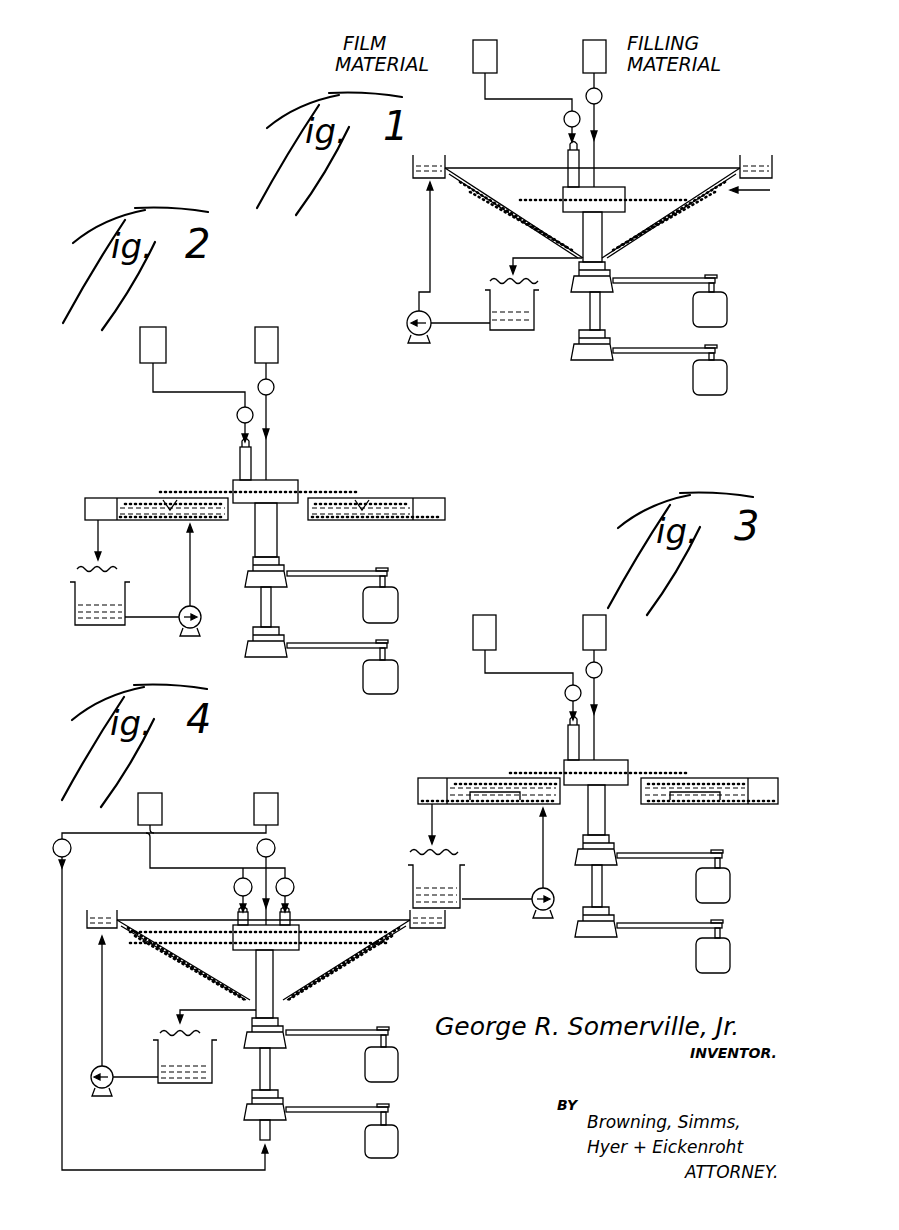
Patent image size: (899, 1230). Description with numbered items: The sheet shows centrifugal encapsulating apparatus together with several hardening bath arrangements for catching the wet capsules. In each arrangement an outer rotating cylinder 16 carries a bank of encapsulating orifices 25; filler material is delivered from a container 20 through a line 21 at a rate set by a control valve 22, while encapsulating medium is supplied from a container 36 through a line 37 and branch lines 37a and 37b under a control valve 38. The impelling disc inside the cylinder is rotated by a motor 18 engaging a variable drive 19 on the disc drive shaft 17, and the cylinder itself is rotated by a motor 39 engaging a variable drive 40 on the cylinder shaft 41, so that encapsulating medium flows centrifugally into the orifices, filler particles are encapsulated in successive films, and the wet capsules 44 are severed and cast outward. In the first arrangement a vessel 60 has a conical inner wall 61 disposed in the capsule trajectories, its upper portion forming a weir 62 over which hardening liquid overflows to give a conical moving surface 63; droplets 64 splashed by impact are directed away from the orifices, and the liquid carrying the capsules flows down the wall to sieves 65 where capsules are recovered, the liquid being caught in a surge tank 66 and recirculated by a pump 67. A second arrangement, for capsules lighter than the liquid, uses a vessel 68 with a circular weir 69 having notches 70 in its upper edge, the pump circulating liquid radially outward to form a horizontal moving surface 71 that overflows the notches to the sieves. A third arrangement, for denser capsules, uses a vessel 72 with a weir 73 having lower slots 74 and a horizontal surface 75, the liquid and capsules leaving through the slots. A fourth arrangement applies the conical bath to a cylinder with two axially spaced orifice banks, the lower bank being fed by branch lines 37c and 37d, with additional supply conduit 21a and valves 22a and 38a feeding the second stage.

In FIG. 1, the cylinder 16 is at (622, 187).
In FIG. 1, the disc drive shaft 17 is at (602, 312).
In FIG. 2, the disc drive shaft 17 is at (271, 610).
In FIG. 3, the disc drive shaft 17 is at (604, 888).
In FIG. 4, the disc drive shaft 17 is at (272, 1078).
In FIG. 1, the motor 18 is at (727, 378).
In FIG. 2, the motor 18 is at (398, 678).
In FIG. 3, the motor 18 is at (730, 955).
In FIG. 4, the motor 18 is at (398, 1140).
In FIG. 1, the variable drive 19 is at (575, 356).
In FIG. 2, the variable drive 19 is at (250, 652).
In FIG. 3, the variable drive 19 is at (598, 945).
In FIG. 4, the variable drive 19 is at (265, 1115).
In FIG. 1, the container 20 is at (583, 50).
In FIG. 2, the container 20 is at (278, 345).
In FIG. 3, the container 20 is at (606, 638).
In FIG. 4, the container 20 is at (278, 795).
In FIG. 1, the line 21 is at (598, 135).
In FIG. 2, the line 21 is at (270, 452).
In FIG. 3, the line 21 is at (600, 722).
In FIG. 4, the line 21 is at (270, 870).
In FIG. 4, the filling material conduit 21a is at (63, 878).
In FIG. 1, the control valve 22 is at (602, 96).
In FIG. 2, the control valve 22 is at (274, 387).
In FIG. 3, the control valve 22 is at (602, 670).
In FIG. 4, the control valve 22 is at (275, 848).
In FIG. 4, the valve 22a is at (71, 848).
In FIG. 1, the encapsulating orifices 25 is at (602, 198).
In FIG. 1, the container 36 is at (497, 55).
In FIG. 2, the container 36 is at (166, 340).
In FIG. 3, the container 36 is at (496, 632).
In FIG. 4, the container 36 is at (162, 795).
In FIG. 1, the line 37 is at (485, 100).
In FIG. 2, the line 37 is at (153, 385).
In FIG. 3, the line 37 is at (485, 680).
In FIG. 4, the line 37 is at (180, 868).
In FIG. 1, the branch line 37a is at (566, 163).
In FIG. 2, the branch line 37a is at (238, 458).
In FIG. 3, the branch line 37a is at (567, 735).
In FIG. 4, the branch line 37a is at (236, 915).
In FIG. 1, the branch line 37b is at (570, 146).
In FIG. 2, the branch line 37b is at (240, 444).
In FIG. 3, the branch line 37b is at (570, 722).
In FIG. 4, the branch line 37b is at (238, 905).
In FIG. 4, the branch line 37c is at (292, 918).
In FIG. 4, the branch line 37d is at (292, 903).
In FIG. 1, the control valve 38 is at (564, 119).
In FIG. 2, the control valve 38 is at (237, 415).
In FIG. 3, the control valve 38 is at (573, 702).
In FIG. 4, the control valve 38 is at (243, 878).
In FIG. 4, the valve 38a is at (290, 885).
In FIG. 1, the motor 39 is at (727, 310).
In FIG. 2, the motor 39 is at (398, 603).
In FIG. 3, the motor 39 is at (730, 890).
In FIG. 4, the motor 39 is at (398, 1066).
In FIG. 1, the variable drive 40 is at (614, 272).
In FIG. 2, the variable drive 40 is at (287, 575).
In FIG. 3, the variable drive 40 is at (615, 850).
In FIG. 4, the variable drive 40 is at (265, 1033).
In FIG. 1, the cylinder shaft 41 is at (606, 245).
In FIG. 2, the cylinder shaft 41 is at (277, 535).
In FIG. 3, the cylinder shaft 41 is at (606, 820).
In FIG. 4, the cylinder shaft 41 is at (264, 984).
In FIG. 1, the wet capsules 44 is at (525, 215).
In FIG. 2, the wet capsules 44 is at (345, 490).
In FIG. 3, the wet capsules 44 is at (528, 775).
In FIG. 4, the wet capsules 44 is at (190, 975).
In FIG. 1, the vessel 60 is at (765, 194).
In FIG. 1, the conical inner wall 61 is at (702, 205).
In FIG. 1, the weir 62 is at (745, 166).
In FIG. 1, the conical moving surface of hardening liquid 63 is at (712, 170).
In FIG. 1, the droplets of hardening liquid 64 is at (510, 188).
In FIG. 2, the droplets of hardening liquid 64 is at (132, 498).
In FIG. 3, the droplets of hardening liquid 64 is at (468, 775).
In FIG. 4, the droplets of hardening liquid 64 is at (158, 918).
In FIG. 1, the sieves 65 is at (500, 278).
In FIG. 2, the sieves 65 is at (112, 572).
In FIG. 3, the sieves 65 is at (445, 850).
In FIG. 4, the sieves 65 is at (208, 1023).
In FIG. 1, the surge tank 66 is at (490, 308).
In FIG. 2, the surge tank 66 is at (125, 605).
In FIG. 3, the surge tank 66 is at (462, 882).
In FIG. 4, the surge tank 66 is at (200, 1090).
In FIG. 1, the pump 67 is at (412, 313).
In FIG. 2, the pump 67 is at (193, 607).
In FIG. 3, the pump 67 is at (558, 888).
In FIG. 4, the pump 67 is at (108, 1066).
In FIG. 2, the vessel 68 is at (452, 496).
In FIG. 2, the weir 69 is at (425, 498).
In FIG. 2, the notches 70 is at (365, 498).
In FIG. 2, the horizontal moving surface of hardening liquid 71 is at (322, 498).
In FIG. 3, the vessel 72 is at (777, 776).
In FIG. 3, the weir 73 is at (752, 778).
In FIG. 3, the slots 74 is at (512, 806).
In FIG. 3, the horizontal moving surface of hardening liquid 75 is at (445, 785).